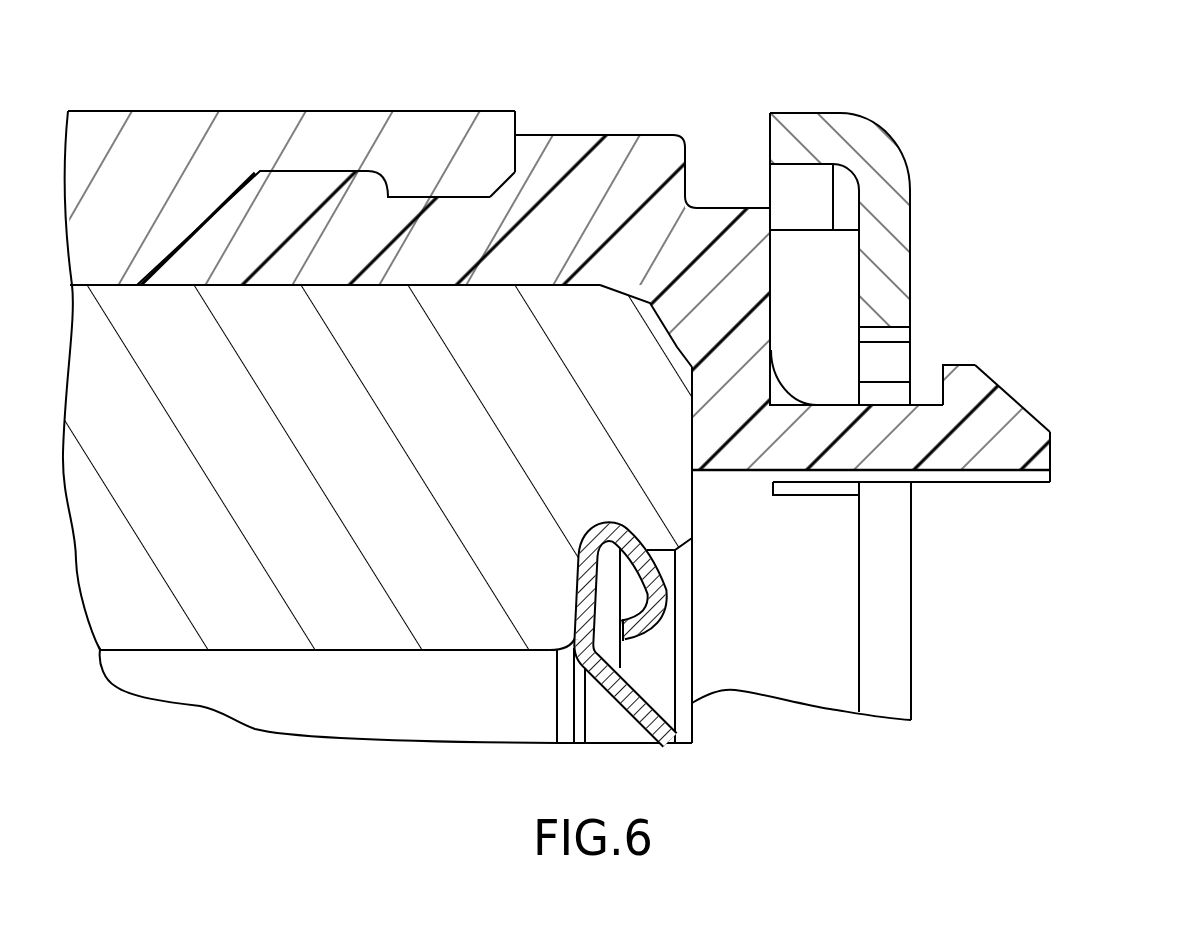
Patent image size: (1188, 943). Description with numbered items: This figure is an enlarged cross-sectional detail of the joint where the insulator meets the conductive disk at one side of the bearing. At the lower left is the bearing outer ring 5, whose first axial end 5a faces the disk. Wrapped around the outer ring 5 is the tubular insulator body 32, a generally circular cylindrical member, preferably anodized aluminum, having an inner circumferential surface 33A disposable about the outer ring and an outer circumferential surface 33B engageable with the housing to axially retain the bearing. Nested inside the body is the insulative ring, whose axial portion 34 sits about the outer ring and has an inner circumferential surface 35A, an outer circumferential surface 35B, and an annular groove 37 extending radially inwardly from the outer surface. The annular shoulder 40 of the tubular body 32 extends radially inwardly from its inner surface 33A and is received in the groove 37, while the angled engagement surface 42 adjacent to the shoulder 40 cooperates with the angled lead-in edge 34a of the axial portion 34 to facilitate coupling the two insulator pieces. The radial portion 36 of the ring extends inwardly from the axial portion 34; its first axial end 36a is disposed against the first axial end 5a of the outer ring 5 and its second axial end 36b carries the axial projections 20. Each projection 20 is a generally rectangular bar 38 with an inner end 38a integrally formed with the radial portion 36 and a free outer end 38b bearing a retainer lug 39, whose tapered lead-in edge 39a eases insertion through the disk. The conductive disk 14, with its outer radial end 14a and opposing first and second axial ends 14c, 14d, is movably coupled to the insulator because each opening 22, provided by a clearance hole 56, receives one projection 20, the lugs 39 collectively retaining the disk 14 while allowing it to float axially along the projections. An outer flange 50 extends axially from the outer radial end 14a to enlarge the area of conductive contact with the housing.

The outer ring 5 is at (329, 642).
The first axial end 5a is at (693, 505).
The conductive disk 14 is at (960, 242).
The outer radial end 14a is at (870, 138).
The first axial end 14c is at (912, 207).
The second axial end 14d is at (859, 253).
The projection 20 is at (1044, 368).
The opening 22 is at (898, 641).
The tubular insulator body 32 is at (222, 95).
The inner circumferential surface 33A is at (113, 288).
The outer circumferential surface 33B is at (277, 110).
The axial portion 34 is at (601, 125).
The angled lead-in edge 34a is at (195, 232).
The inner circumferential surface 35A is at (393, 287).
The outer circumferential surface 35B is at (322, 171).
The radial portion 36 is at (785, 303).
The first axial end 36a is at (691, 393).
The second axial end 36b is at (773, 350).
The annular groove 37 is at (443, 198).
The rectangular bar 38 is at (916, 462).
The inner end 38a is at (813, 447).
The free outer end 38b is at (1036, 457).
The retainer lug 39 is at (962, 373).
The tapered lead-in edge 39a is at (998, 374).
The annular shoulder 40 is at (478, 190).
The angled engagement surface 42 is at (175, 246).
The outer flange 50 is at (808, 128).
The clearance hole 56 is at (892, 590).